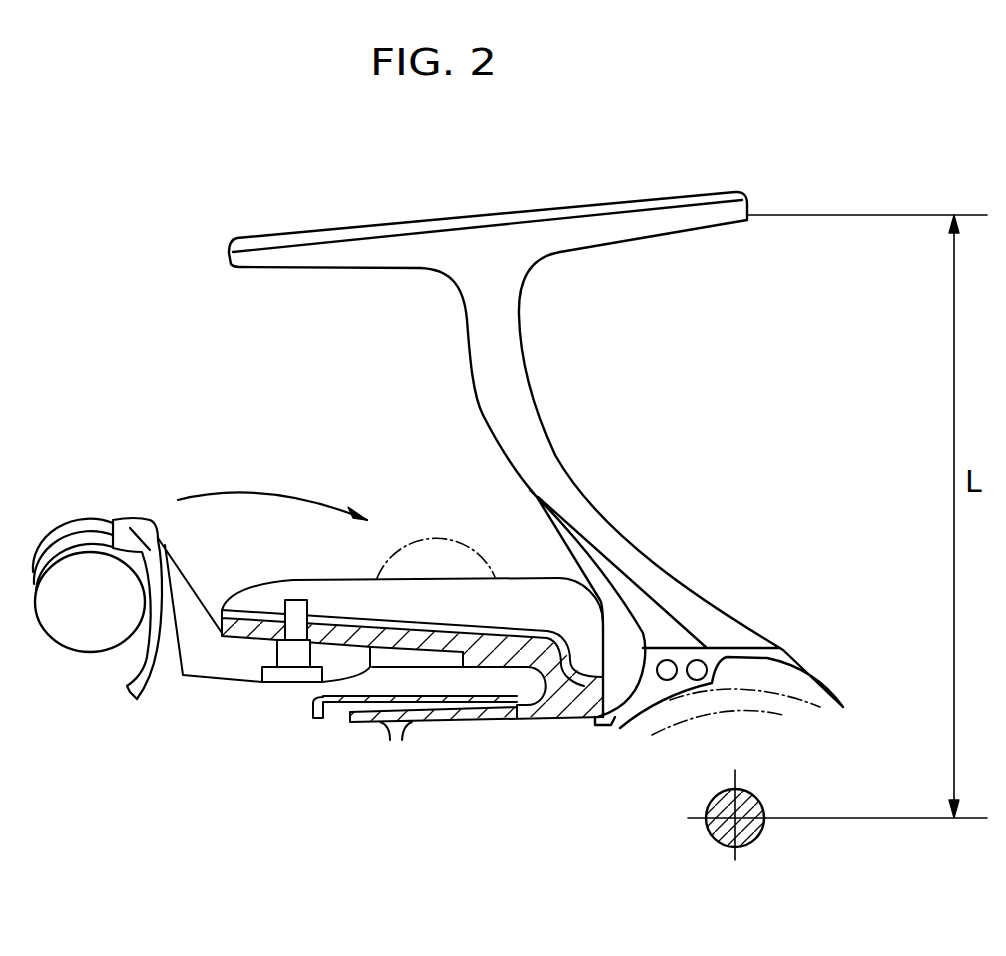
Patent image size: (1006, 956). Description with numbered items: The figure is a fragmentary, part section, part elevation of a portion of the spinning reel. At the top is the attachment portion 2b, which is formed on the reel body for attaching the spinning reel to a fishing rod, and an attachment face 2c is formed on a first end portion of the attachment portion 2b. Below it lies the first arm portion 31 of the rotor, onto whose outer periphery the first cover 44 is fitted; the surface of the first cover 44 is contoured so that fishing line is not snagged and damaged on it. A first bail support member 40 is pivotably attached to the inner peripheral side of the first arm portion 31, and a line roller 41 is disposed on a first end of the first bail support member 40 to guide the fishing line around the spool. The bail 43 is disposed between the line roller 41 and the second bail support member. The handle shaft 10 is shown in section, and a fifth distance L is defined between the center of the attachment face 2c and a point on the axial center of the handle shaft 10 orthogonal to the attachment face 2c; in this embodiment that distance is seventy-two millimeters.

The attachment face 2c is at (455, 217).
The attachment portion 2b is at (515, 362).
The first cover 44 is at (403, 603).
The first arm portion 31 is at (241, 622).
The first bail support member 40 is at (220, 668).
The line roller 41 is at (68, 633).
The bail 43 is at (148, 680).
The handle shaft 10 is at (755, 802).